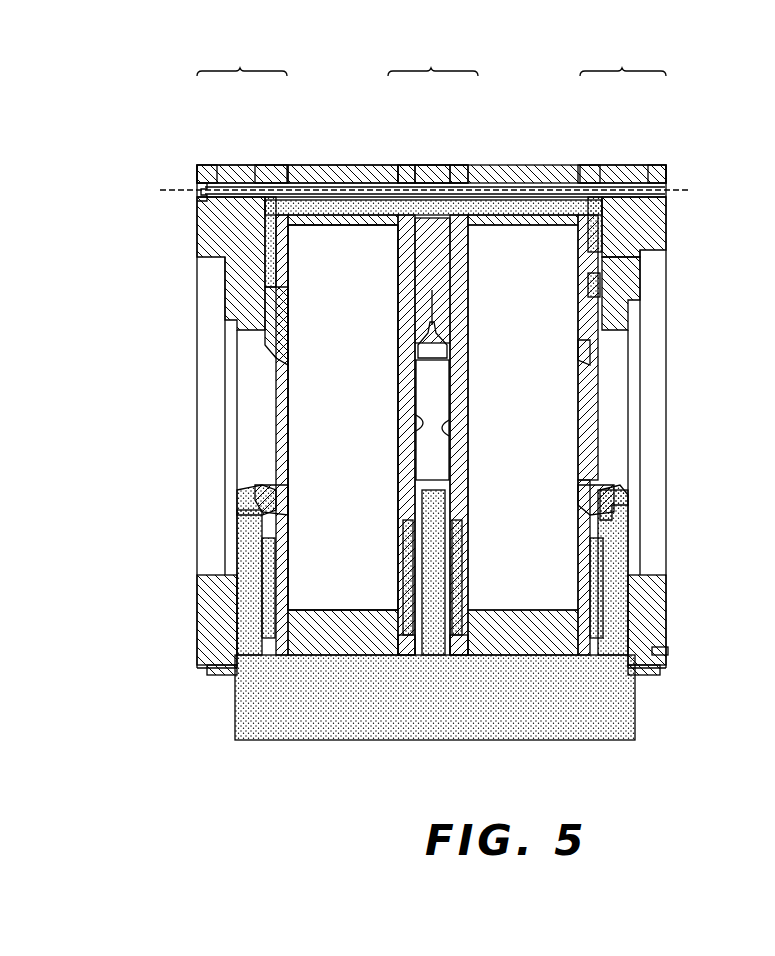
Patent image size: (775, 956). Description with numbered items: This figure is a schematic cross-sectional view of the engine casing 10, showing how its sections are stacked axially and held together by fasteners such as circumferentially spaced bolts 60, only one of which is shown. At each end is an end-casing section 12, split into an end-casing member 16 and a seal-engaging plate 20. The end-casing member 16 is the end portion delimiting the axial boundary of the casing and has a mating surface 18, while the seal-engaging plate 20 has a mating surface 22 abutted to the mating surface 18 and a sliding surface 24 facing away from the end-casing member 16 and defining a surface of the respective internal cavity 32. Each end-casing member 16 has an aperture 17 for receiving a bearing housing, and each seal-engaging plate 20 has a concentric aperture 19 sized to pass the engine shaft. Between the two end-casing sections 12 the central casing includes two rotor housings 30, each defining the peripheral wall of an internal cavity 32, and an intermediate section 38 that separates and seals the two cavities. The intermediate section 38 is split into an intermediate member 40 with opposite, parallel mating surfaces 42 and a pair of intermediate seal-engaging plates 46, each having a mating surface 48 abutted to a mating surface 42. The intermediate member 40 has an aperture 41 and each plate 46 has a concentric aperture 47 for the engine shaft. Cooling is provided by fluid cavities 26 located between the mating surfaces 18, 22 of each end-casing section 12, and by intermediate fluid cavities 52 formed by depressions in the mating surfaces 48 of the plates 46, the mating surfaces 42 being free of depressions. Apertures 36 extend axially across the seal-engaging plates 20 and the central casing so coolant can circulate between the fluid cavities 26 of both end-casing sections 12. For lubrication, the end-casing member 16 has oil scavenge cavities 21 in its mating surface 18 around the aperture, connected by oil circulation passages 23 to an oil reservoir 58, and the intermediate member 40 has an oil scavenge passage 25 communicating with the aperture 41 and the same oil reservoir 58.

The engine casing 10 is at (112, 118).
The end-casing section 12 is at (431, 109).
The end-casing member 16 is at (217, 165).
The aperture 17 is at (225, 322).
The mating surface 18 is at (605, 250).
The aperture 19 is at (285, 365).
The seal-engaging plate 20 is at (272, 165).
The oil scavenge cavity 21 is at (270, 505).
The mating surface 22 is at (605, 315).
The oil circulation passage 23 is at (250, 636).
The sliding surface 24 is at (300, 341).
The oil scavenge passage 25 is at (432, 572).
The fluid cavity 26 is at (268, 282).
The rotor housing 30 is at (355, 165).
The internal cavity 32 is at (342, 255).
The aperture 36 is at (507, 205).
The intermediate section 38 is at (433, 109).
The intermediate member 40 is at (432, 165).
The aperture 41 is at (580, 360).
The mating surface 42 is at (418, 372).
The intermediate seal-engaging plate 46 is at (403, 165).
The aperture 47 is at (458, 412).
The mating surface 48 is at (420, 423).
The intermediate fluid cavity 52 is at (447, 650).
The oil reservoir 58 is at (600, 718).
The bolt 60 is at (197, 193).